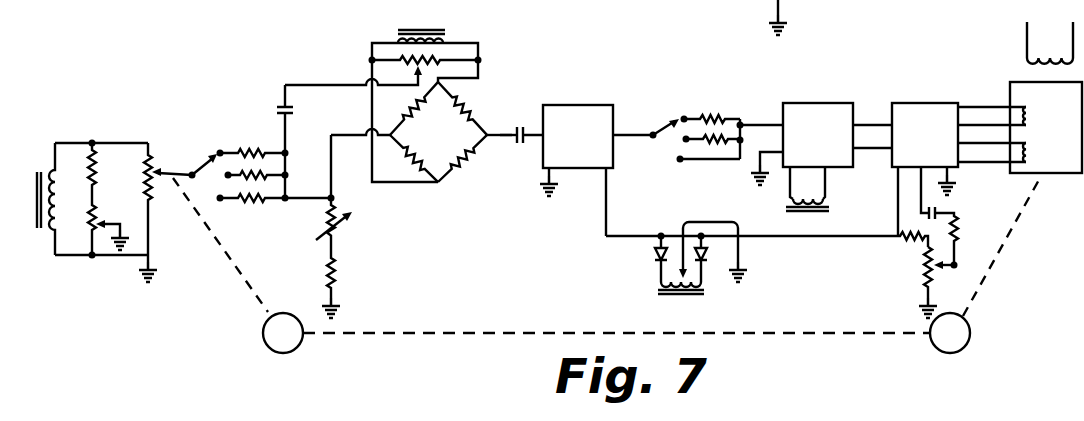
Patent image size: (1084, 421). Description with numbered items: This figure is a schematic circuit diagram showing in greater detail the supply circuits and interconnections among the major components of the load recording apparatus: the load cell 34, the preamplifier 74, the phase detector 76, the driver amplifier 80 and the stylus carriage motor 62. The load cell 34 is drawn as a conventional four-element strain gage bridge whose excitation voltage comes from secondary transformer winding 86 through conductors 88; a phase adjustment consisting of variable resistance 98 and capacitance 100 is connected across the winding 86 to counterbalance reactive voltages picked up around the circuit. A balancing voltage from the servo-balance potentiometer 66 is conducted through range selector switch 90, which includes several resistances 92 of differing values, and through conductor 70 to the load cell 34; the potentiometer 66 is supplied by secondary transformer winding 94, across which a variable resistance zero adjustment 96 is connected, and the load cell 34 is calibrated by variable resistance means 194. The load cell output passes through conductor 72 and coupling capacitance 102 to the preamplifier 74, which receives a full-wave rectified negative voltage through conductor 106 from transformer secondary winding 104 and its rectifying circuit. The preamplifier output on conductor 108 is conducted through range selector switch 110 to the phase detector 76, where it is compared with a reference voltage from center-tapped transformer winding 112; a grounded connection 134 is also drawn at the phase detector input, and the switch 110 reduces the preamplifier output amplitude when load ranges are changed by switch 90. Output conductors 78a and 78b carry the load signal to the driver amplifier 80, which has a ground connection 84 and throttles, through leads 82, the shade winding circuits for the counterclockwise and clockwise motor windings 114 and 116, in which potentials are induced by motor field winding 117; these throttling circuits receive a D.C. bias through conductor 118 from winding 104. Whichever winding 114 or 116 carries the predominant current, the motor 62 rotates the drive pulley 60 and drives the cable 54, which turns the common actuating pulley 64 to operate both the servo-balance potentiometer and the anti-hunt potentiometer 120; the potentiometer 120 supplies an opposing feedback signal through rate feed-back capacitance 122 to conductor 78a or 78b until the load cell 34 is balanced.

The secondary transformer winding 94 is at (50, 176).
The variable resistance zero adjustment 96 is at (98, 226).
The servo-balance potentiometer 66 is at (150, 190).
The range selector switch 90 is at (200, 168).
The resistances 92 is at (250, 206).
The capacitance 100 is at (276, 110).
The conductor 70 is at (298, 199).
The variable resistance means 194 is at (336, 246).
The common actuating pulley 64 is at (263, 335).
The secondary transformer winding 86 is at (397, 31).
The variable resistance 98 is at (440, 58).
The conductors 88 is at (370, 112).
The load cell 34 is at (473, 130).
The conductor 72 is at (503, 137).
The coupling capacitance 102 is at (522, 122).
The preamplifier 74 is at (600, 105).
The range selector switch 110 is at (672, 118).
The conductor 108 is at (622, 137).
The conductor 106 is at (610, 207).
The transformer secondary winding 104 is at (655, 285).
The ground lead 134 is at (757, 163).
The center-tapped transformer winding 112 is at (787, 205).
The phase detector 76 is at (812, 103).
The output conductor 78a is at (873, 122).
The output conductor 78b is at (870, 150).
The driver amplifier 80 is at (945, 103).
The leads 82 is at (978, 127).
The ground 84 is at (961, 168).
The counterclockwise motor winding 114 is at (1027, 114).
The clockwise motor winding 116 is at (1027, 154).
The motor field winding 117 is at (1047, 58).
The stylus carriage motor 62 is at (1074, 173).
The rate feed-back capacitance 122 is at (940, 211).
The anti-hunt potentiometer 120 is at (925, 272).
The cable 54 is at (998, 268).
The drive pulley 60 is at (970, 335).
The conductor 118 is at (800, 238).